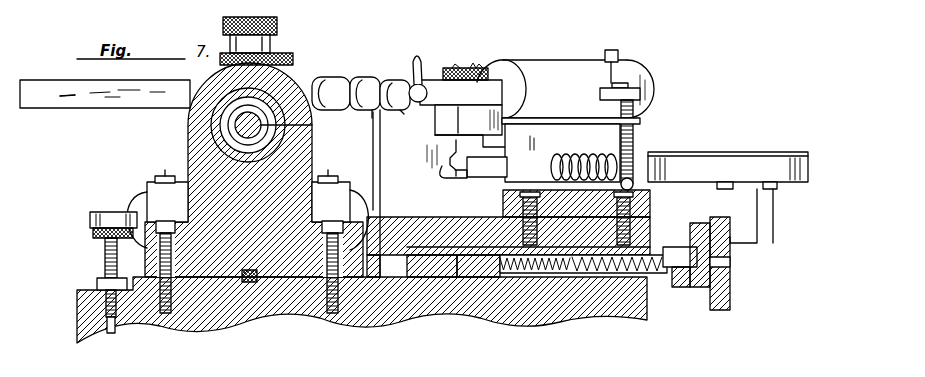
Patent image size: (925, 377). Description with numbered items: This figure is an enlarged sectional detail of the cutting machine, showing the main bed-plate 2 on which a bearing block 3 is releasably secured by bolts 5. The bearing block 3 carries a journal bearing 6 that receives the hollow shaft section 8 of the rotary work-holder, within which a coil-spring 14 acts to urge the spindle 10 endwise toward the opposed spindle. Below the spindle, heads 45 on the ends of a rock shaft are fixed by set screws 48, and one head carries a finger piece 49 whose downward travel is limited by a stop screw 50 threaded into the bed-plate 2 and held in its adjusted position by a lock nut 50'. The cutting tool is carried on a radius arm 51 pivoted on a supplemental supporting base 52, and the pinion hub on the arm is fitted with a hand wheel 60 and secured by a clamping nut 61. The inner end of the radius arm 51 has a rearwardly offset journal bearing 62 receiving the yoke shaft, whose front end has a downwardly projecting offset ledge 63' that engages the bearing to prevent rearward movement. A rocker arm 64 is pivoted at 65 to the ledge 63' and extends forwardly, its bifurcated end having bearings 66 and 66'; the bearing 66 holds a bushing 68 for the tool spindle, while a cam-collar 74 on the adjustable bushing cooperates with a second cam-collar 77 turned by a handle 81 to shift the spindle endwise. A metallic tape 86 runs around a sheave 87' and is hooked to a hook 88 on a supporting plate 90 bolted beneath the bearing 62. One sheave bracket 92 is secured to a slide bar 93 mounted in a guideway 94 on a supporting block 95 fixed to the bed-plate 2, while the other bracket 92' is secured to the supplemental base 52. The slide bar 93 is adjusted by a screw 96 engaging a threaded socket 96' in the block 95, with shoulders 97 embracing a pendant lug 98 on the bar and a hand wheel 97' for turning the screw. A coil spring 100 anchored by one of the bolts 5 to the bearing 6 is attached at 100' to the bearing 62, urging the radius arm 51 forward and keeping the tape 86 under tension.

The bed-plate 2 is at (431, 303).
The bearing block 3 is at (230, 262).
The bolts 5 is at (168, 313).
The journal bearing 6 is at (188, 95).
The shaft section 8 is at (188, 122).
The spindle 10 is at (303, 125).
The coil-spring 14 is at (196, 139).
The heads 45 is at (147, 191).
The set screws 48 is at (165, 180).
The finger piece 49 is at (108, 213).
The stop screw 50 is at (102, 253).
The lock nut 50' is at (101, 298).
The radius arm 51 is at (99, 100).
The supplemental supporting base 52 is at (350, 163).
The hand wheel 60 is at (293, 56).
The clamping nut 61 is at (277, 27).
The journal bearing 62 is at (553, 66).
The offset ledge 63' is at (457, 113).
The rocker arm 64 is at (444, 78).
The pivot 65 is at (468, 66).
The bearing 66 is at (331, 81).
The bearing 66' is at (365, 80).
The bushing 68 is at (375, 112).
The cam-collar 74 is at (396, 80).
The cam-collar 77 is at (400, 108).
The handle 81 is at (417, 54).
The metallic tape 86 is at (548, 165).
The sheave 87' is at (728, 159).
The hook 88 is at (455, 176).
The supporting plate 90 is at (541, 121).
The bracket 92 is at (561, 217).
The bracket 92' is at (751, 228).
The slide bar 93 is at (407, 222).
The guideway 94 is at (457, 252).
The supporting block 95 is at (484, 262).
The screw 96 is at (617, 299).
The threaded socket 96' is at (583, 301).
The shoulders 97 is at (690, 245).
The hand wheel 97' is at (736, 264).
The pendant lug 98 is at (680, 288).
The coil spring 100 is at (584, 158).
The spring attachment 100' is at (639, 139).